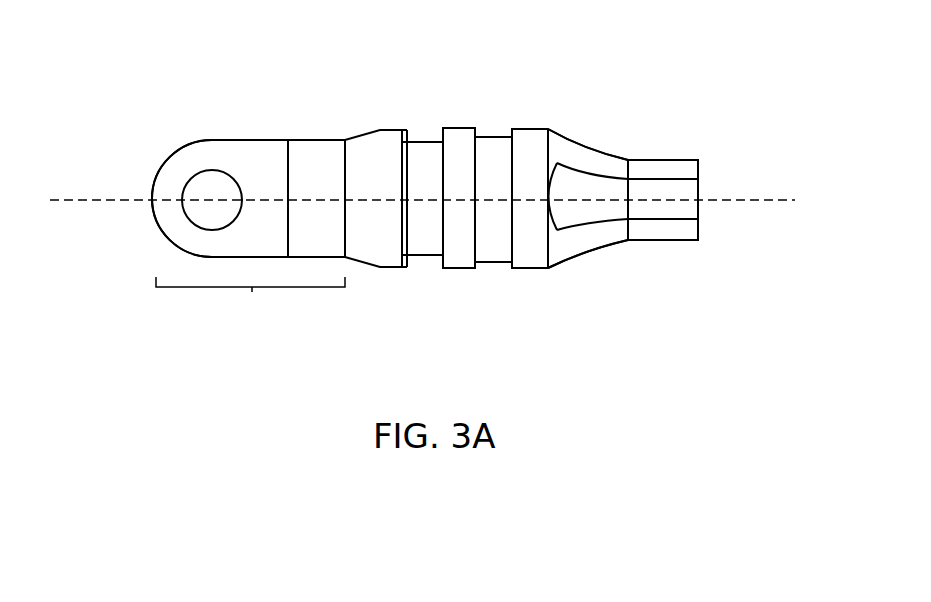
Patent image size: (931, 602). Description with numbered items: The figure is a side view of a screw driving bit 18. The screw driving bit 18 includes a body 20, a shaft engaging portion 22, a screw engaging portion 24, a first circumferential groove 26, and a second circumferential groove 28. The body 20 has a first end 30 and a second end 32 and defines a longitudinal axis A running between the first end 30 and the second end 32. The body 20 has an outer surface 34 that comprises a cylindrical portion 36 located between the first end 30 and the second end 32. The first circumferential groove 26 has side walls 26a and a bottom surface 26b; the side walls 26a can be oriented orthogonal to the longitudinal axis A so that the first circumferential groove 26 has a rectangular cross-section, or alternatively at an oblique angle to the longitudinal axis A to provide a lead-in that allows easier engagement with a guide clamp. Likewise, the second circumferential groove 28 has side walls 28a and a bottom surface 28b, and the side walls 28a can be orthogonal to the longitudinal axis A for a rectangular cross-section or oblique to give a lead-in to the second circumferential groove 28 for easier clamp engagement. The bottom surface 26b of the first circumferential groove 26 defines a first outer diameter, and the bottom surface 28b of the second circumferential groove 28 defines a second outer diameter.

The screw driving bit 18 is at (278, 72).
The body 20 is at (523, 140).
The shaft engaging portion 22 is at (250, 230).
The screw engaging portion 24 is at (653, 160).
The first circumferential groove 26 is at (496, 122).
The side walls 26a is at (505, 268).
The bottom surface 26b is at (482, 263).
The second circumferential groove 28 is at (416, 120).
The side walls 28a is at (410, 265).
The bottom surface 28b is at (433, 260).
The first end 30 is at (125, 154).
The second end 32 is at (712, 167).
The outer surface 34 is at (533, 137).
The cylindrical portion 36 is at (397, 128).
The longitudinal axis A is at (778, 200).